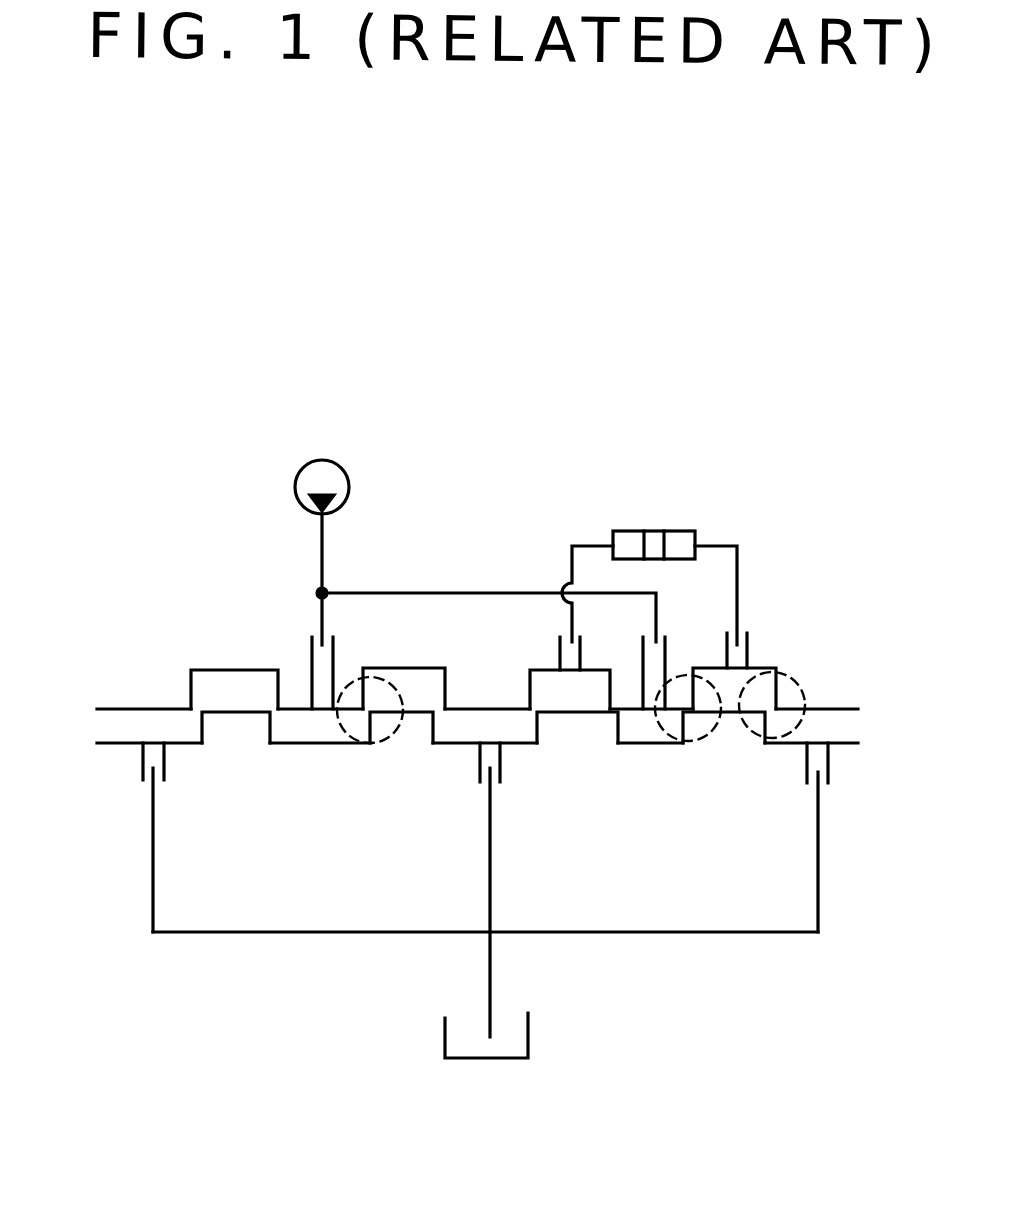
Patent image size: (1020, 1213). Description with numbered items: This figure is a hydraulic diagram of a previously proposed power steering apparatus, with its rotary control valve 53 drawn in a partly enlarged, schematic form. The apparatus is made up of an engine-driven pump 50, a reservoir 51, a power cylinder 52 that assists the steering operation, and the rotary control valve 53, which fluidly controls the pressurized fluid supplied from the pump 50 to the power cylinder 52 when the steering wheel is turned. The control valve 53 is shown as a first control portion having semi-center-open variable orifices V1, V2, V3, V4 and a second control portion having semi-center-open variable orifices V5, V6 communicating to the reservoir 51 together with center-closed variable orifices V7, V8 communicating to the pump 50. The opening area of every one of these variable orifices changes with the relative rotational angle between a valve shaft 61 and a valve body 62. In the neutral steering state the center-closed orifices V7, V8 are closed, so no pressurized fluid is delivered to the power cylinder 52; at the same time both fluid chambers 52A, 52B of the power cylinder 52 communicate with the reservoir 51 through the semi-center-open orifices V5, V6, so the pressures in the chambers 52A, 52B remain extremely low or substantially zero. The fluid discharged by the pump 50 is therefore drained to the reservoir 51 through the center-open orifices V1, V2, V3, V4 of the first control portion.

The engine-driven pump 50 is at (338, 458).
The reservoir 51 is at (498, 1060).
The power cylinder 52 is at (676, 528).
The fluid chamber 52A is at (628, 530).
The fluid chamber 52B is at (697, 530).
The rotary control valve 53 is at (122, 658).
The valve shaft 61 is at (837, 757).
The valve body 62 is at (817, 690).
The semi-center-open variable orifice V1 is at (287, 724).
The semi-center-open variable orifice V2 is at (352, 730).
The semi-center-open variable orifice V3 is at (206, 694).
The semi-center-open variable orifice V4 is at (431, 694).
The semi-center-open variable orifice V5 is at (541, 696).
The semi-center-open variable orifice V6 is at (763, 694).
The center-closed variable orifice V7 is at (636, 730).
The center-closed variable orifice V8 is at (671, 730).